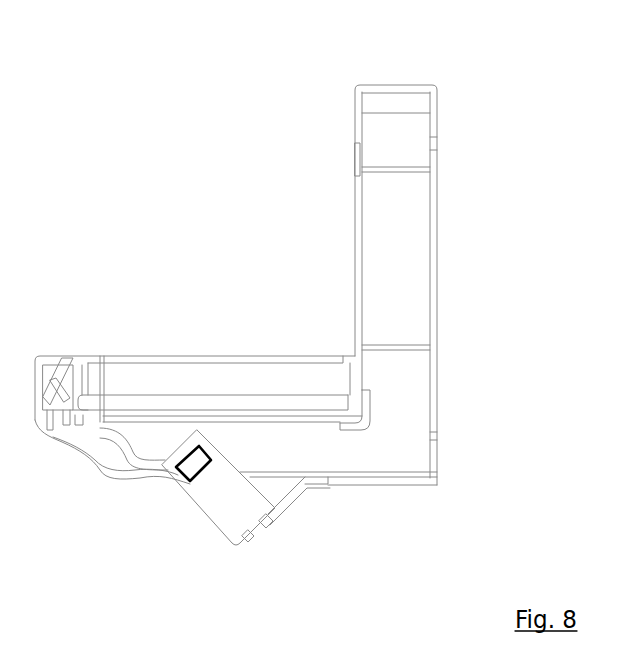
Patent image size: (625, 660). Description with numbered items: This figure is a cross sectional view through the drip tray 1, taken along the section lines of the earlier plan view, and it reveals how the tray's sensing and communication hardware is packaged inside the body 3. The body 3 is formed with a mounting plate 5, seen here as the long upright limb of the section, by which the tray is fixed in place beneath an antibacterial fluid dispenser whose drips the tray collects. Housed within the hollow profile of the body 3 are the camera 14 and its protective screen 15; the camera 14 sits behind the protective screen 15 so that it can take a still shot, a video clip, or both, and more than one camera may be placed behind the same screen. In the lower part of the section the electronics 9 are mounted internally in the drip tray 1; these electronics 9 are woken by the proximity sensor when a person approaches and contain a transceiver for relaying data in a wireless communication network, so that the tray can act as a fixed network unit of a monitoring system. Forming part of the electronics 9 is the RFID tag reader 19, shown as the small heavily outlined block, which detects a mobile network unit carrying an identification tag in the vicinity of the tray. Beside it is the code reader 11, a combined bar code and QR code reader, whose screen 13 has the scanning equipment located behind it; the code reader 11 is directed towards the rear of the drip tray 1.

The drip tray 1 is at (482, 90).
The body 3 is at (433, 220).
The mounting plate 5 is at (436, 279).
The electronics 9 is at (224, 508).
The code reader 11 is at (233, 538).
The screen 13 is at (258, 532).
The camera 14 is at (383, 133).
The protective screen 15 is at (357, 158).
The RFID tag reader 19 is at (176, 480).